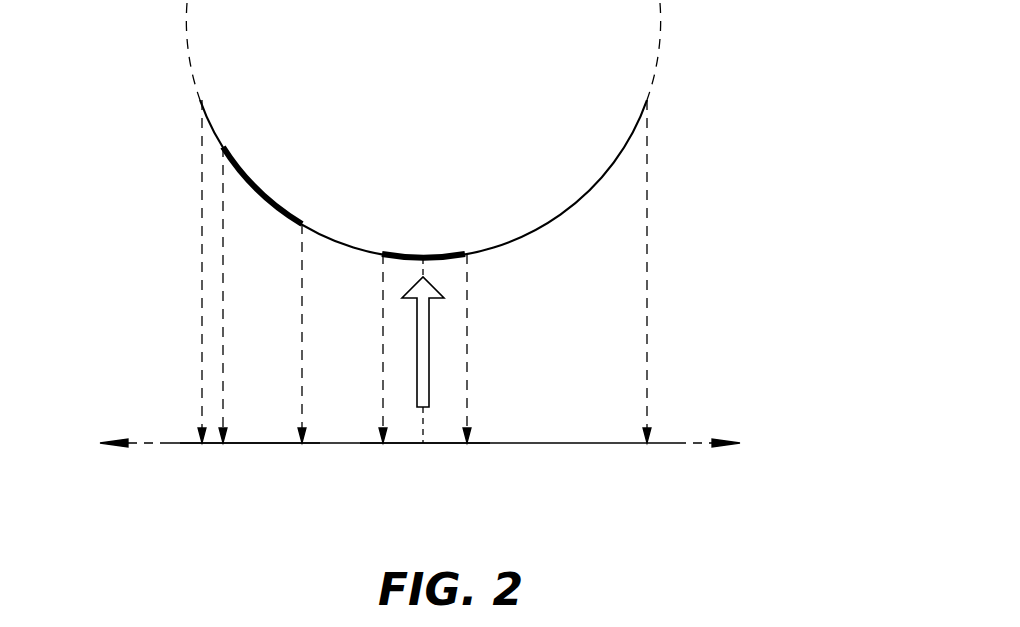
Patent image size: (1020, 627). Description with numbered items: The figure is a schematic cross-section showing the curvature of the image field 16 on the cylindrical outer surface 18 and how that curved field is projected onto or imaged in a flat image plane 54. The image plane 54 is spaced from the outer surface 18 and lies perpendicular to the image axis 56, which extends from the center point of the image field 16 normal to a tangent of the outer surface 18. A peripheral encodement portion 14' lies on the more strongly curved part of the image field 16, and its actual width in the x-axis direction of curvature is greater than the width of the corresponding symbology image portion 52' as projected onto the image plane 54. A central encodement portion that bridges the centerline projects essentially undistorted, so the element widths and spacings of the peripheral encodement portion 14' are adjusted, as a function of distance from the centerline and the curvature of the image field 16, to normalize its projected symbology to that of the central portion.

The peripheral encodement portion 14' is at (276, 185).
The image field 16 is at (562, 217).
The cylindrical outer surface 18 is at (664, 50).
The symbology image portion 52' is at (250, 303).
The image plane 54 is at (560, 445).
The image axis 56 is at (444, 343).